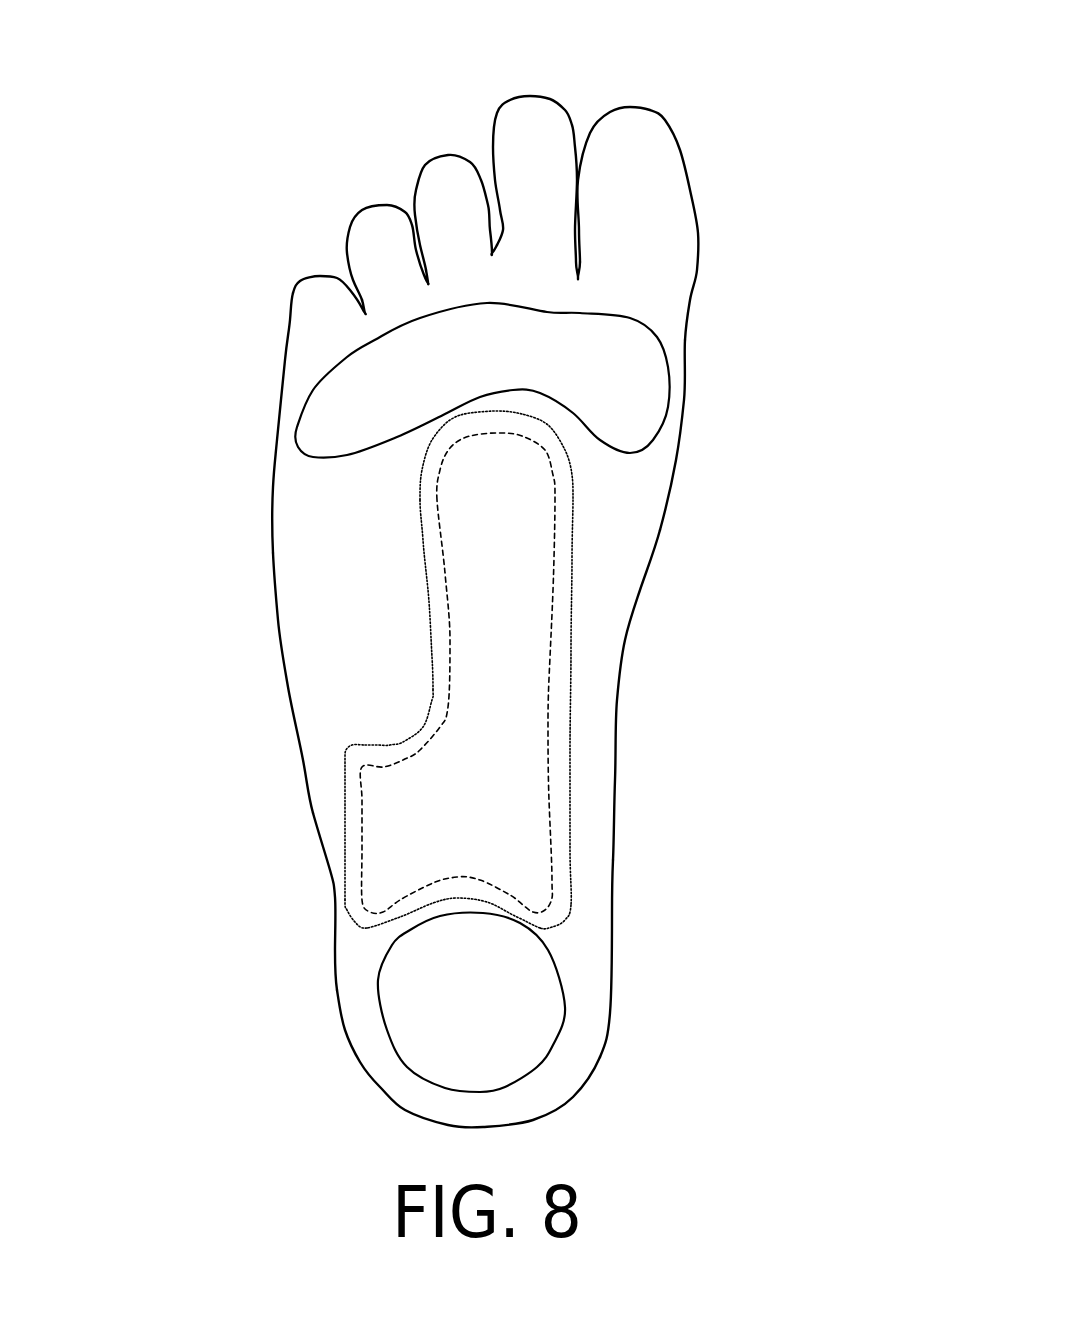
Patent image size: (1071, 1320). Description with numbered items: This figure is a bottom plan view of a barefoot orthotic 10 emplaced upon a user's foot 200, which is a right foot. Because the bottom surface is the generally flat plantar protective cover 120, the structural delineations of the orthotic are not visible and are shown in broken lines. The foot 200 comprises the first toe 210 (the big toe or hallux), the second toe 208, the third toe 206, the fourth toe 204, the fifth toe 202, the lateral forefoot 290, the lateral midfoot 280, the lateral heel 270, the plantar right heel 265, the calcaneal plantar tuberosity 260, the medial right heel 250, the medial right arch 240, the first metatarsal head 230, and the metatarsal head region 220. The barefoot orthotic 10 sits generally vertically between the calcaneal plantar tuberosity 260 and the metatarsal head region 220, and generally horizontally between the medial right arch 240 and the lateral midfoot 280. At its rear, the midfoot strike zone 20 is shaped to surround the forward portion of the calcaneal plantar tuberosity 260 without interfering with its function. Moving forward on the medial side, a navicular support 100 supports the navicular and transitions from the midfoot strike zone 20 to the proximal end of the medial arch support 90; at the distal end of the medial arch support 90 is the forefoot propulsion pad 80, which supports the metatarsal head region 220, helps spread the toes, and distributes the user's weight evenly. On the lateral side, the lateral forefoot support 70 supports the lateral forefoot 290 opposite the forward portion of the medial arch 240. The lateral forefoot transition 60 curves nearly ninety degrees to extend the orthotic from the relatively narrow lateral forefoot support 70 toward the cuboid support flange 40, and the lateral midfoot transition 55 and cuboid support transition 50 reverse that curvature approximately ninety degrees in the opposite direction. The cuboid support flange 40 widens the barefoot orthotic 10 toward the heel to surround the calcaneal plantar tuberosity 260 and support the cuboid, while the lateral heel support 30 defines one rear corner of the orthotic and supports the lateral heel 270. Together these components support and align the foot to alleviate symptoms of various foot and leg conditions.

The barefoot orthotic 10 is at (632, 535).
The midfoot strike zone 20 is at (458, 897).
The lateral heel support 30 is at (353, 915).
The cuboid support flange 40 is at (345, 818).
The cuboid support transition 50 is at (345, 748).
The lateral midfoot transition 55 is at (368, 742).
The lateral forefoot transition 60 is at (432, 698).
The lateral forefoot support 70 is at (433, 588).
The forefoot propulsion pad 80 is at (475, 413).
The medial arch support 90 is at (567, 648).
The navicular support 100 is at (565, 915).
The plantar protective cover 120 is at (455, 816).
The user's foot 200 is at (236, 92).
The fifth toe 202 is at (307, 278).
The fourth toe 204 is at (368, 207).
The third toe 206 is at (432, 155).
The second toe 208 is at (535, 96).
The first toe 210 is at (662, 113).
The metatarsal head region 220 is at (668, 362).
The first metatarsal head 230 is at (712, 431).
The medial right arch 240 is at (650, 710).
The medial right heel 250 is at (651, 958).
The calcaneal plantar tuberosity 260 is at (550, 1057).
The plantar right heel 265 is at (319, 1112).
The lateral heel 270 is at (304, 935).
The lateral midfoot 280 is at (250, 697).
The lateral forefoot 290 is at (231, 469).